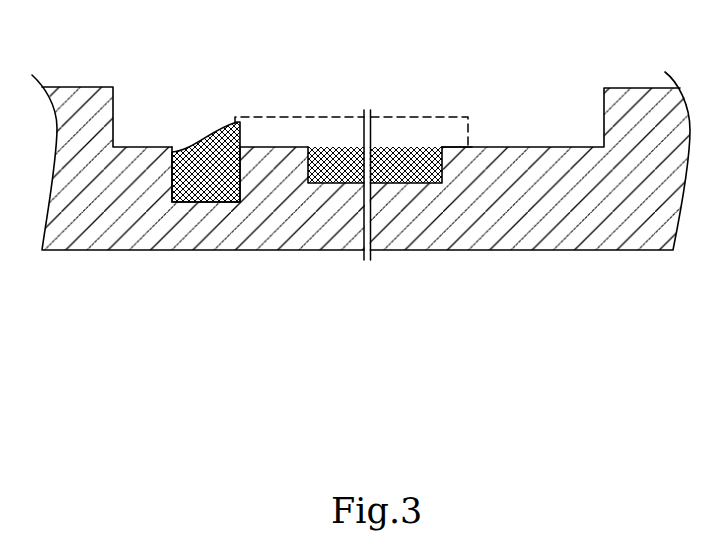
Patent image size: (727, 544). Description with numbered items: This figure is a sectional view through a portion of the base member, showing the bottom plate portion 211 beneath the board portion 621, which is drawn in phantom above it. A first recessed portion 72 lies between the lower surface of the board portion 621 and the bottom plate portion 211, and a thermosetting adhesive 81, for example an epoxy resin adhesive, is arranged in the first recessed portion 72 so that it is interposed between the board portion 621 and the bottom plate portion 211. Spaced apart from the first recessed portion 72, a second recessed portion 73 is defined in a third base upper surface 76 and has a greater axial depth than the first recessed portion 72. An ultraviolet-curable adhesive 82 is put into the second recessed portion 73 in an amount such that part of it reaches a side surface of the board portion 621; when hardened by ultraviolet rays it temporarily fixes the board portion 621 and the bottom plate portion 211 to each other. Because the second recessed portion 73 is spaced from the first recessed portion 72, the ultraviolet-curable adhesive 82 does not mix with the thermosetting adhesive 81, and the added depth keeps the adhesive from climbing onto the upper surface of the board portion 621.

The bottom plate portion 211 is at (76, 88).
The second recessed portion 73 is at (177, 203).
The ultraviolet-curable adhesive 82 is at (207, 147).
The third base upper surface 76 is at (273, 148).
The first recessed portion 72 is at (332, 185).
The thermosetting adhesive 81 is at (335, 158).
The board portion 621 is at (303, 121).